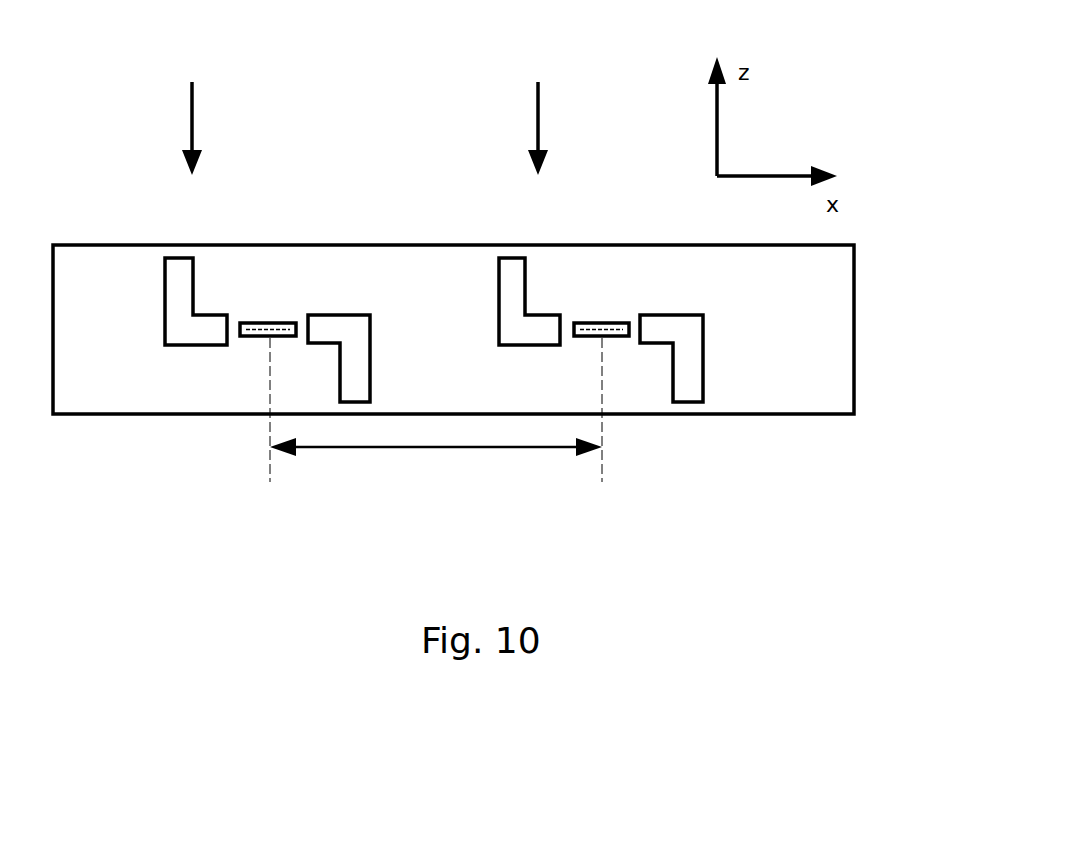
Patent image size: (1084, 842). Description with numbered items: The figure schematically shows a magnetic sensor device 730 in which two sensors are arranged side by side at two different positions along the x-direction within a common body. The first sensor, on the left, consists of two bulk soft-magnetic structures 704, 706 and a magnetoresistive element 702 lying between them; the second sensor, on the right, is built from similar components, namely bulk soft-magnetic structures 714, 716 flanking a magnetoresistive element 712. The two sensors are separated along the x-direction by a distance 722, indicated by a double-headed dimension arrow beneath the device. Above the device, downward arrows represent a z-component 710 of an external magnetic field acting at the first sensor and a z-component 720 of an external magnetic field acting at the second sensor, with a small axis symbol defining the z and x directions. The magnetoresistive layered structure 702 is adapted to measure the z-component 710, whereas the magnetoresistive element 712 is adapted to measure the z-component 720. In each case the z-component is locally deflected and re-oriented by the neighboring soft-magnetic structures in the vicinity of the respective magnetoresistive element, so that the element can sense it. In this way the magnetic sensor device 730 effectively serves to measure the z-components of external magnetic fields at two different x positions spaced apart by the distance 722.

The magnetoresistive element 702 is at (280, 340).
The bulk soft-magnetic structure 704 is at (195, 295).
The bulk soft-magnetic structure 706 is at (370, 338).
The z-component of external magnetic field 710 is at (192, 125).
The magnetoresistive element 712 is at (614, 340).
The bulk soft-magnetic structure 714 is at (529, 297).
The bulk soft-magnetic structure 716 is at (703, 338).
The z-component of external magnetic field 720 is at (538, 122).
The distance 722 is at (352, 447).
The magnetic sensor device 730 is at (854, 330).